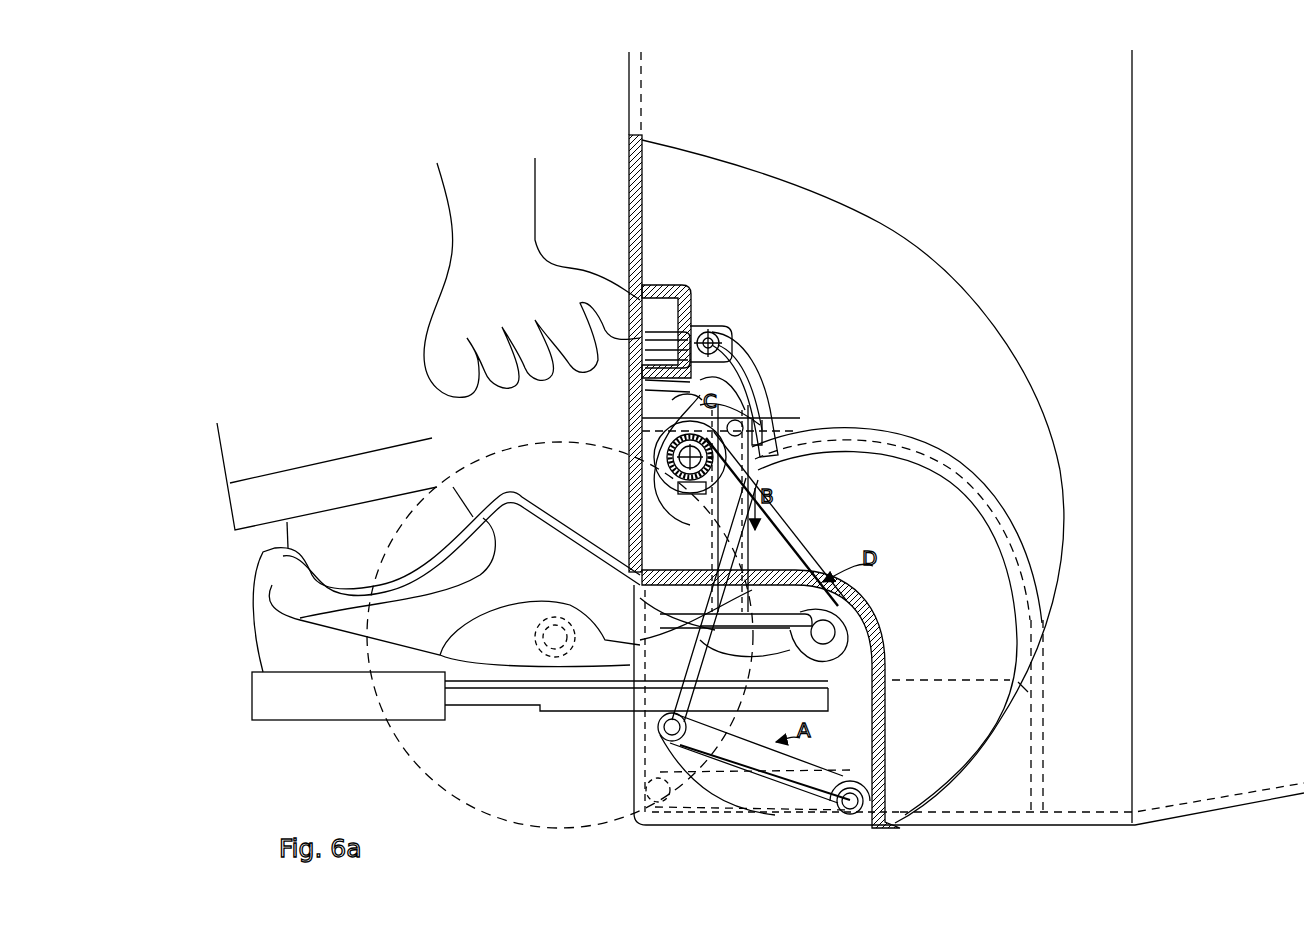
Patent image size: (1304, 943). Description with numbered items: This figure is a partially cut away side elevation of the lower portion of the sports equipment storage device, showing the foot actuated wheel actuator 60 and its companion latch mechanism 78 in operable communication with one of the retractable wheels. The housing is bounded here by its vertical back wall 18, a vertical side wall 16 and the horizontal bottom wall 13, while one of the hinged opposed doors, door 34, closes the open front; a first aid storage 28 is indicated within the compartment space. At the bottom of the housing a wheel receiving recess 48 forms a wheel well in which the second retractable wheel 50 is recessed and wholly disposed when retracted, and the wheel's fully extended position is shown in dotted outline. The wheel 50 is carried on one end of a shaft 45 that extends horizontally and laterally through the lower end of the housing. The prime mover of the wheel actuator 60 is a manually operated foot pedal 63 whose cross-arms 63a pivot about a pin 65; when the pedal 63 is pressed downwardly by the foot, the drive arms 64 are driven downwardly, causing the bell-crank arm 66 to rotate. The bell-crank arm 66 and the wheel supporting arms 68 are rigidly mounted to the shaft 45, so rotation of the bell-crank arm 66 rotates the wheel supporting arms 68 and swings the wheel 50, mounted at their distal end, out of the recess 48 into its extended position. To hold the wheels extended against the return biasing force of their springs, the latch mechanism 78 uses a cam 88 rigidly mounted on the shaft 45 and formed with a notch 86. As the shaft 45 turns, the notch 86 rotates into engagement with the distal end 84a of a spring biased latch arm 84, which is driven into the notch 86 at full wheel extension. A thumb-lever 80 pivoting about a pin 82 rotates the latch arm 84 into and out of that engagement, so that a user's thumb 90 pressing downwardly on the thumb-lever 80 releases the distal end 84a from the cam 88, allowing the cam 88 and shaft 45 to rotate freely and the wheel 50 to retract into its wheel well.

The back wall 18 is at (629, 95).
The side wall 16 is at (974, 165).
The bottom wall 13 is at (908, 826).
The door 34 is at (1288, 694).
The wheel receiving recess 48 is at (1001, 782).
The second retractable wheel 50 is at (945, 790).
The first aid storage 28 is at (1002, 492).
The thumb 90 is at (620, 297).
The thumb-lever 80 is at (695, 284).
The pin 82 is at (713, 333).
The bell-crank arm 66 is at (705, 372).
The latch mechanism 78 is at (798, 358).
The wheel actuator 60 is at (888, 350).
The notch 86 is at (688, 383).
The latch arm 84 is at (752, 409).
The distal end of latch arm 84a is at (762, 441).
The cam 88 is at (670, 408).
The shaft 45 is at (667, 423).
The drive arms 64 is at (768, 556).
The wheel supporting arms 68 is at (818, 570).
The foot pedal 63 is at (806, 755).
The cross-arms 63a is at (797, 790).
The pin 65 is at (850, 815).